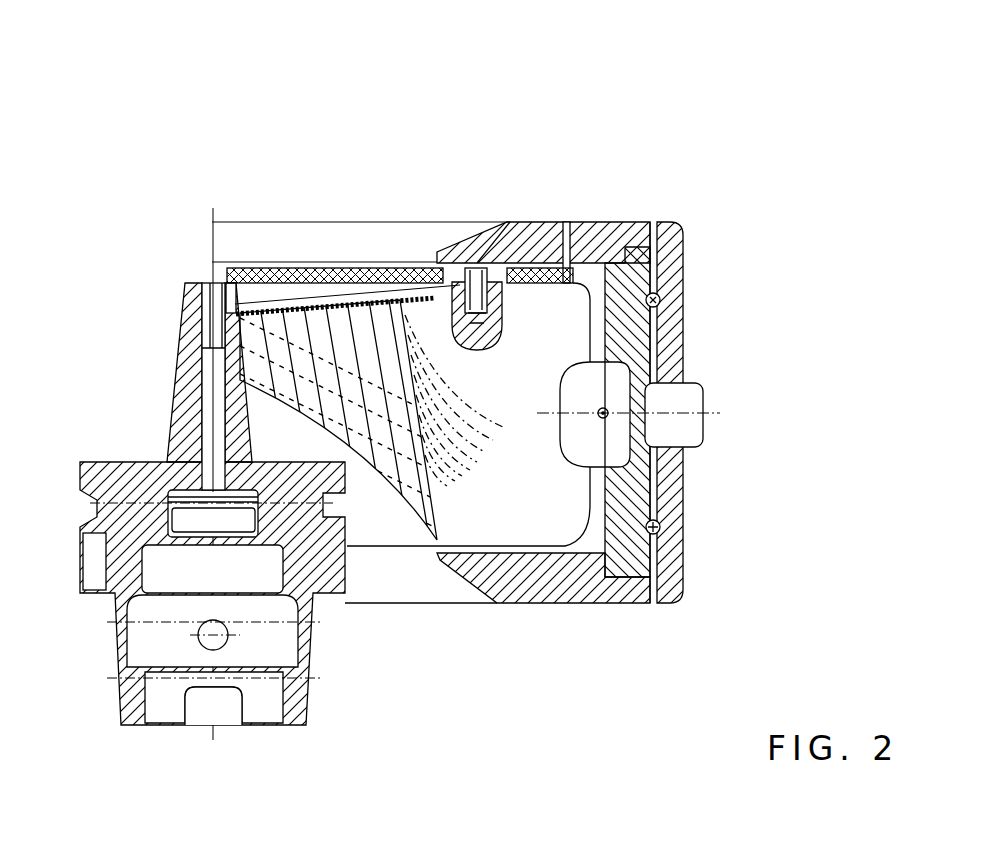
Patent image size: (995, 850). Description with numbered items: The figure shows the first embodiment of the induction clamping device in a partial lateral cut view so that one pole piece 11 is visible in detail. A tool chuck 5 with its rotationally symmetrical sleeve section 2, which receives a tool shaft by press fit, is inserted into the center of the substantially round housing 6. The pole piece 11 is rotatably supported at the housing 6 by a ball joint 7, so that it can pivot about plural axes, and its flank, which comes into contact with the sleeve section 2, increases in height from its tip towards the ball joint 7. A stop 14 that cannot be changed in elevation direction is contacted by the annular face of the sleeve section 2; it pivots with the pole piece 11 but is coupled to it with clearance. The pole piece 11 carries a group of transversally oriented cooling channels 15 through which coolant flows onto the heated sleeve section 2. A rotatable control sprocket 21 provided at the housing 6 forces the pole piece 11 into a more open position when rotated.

The sleeve section 2 is at (182, 348).
The tool chuck 5 is at (127, 473).
The housing 6 is at (617, 235).
The ball joint 7 is at (663, 433).
The pole piece 11 is at (317, 320).
The stop 14 is at (433, 268).
The cooling channels 15 is at (413, 457).
The control sprocket 21 is at (690, 243).